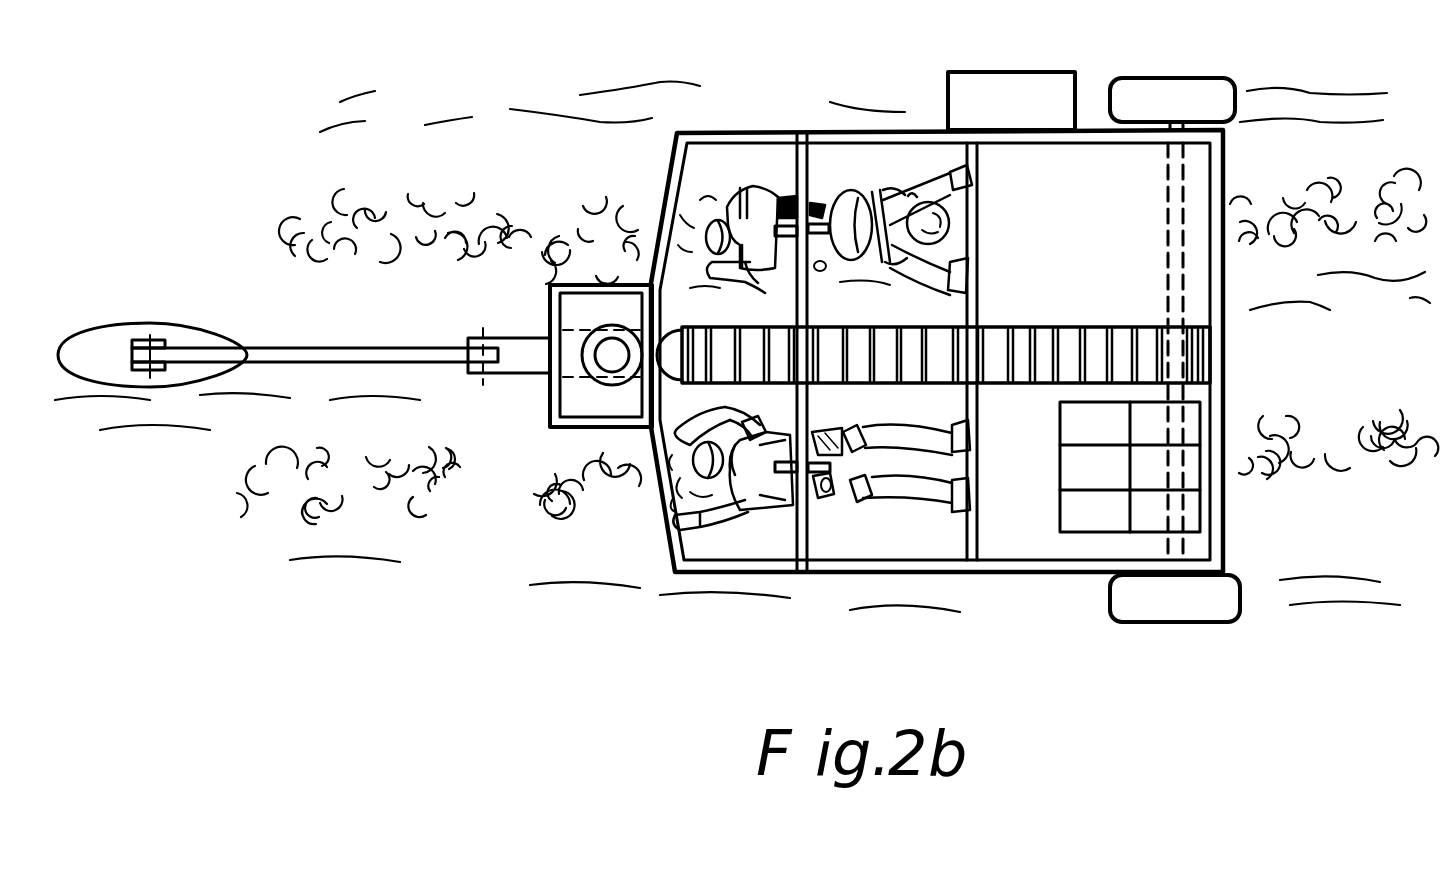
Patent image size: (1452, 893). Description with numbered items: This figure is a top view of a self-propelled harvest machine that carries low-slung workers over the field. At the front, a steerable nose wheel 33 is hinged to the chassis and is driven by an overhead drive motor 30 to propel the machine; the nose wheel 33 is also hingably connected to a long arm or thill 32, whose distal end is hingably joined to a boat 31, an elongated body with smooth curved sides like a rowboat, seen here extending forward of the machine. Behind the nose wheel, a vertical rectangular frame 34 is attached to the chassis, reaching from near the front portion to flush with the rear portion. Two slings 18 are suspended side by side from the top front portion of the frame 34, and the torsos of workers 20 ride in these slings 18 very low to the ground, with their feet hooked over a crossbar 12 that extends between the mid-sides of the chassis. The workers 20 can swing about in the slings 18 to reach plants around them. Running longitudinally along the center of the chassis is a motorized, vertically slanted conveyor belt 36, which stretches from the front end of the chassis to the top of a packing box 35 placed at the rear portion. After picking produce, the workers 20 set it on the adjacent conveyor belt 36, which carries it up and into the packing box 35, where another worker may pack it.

The crossbar 12 is at (977, 266).
The slings 18 is at (818, 222).
The workers 20 is at (820, 502).
The drive motor 30 is at (550, 420).
The boat 31 is at (172, 323).
The arm or thill 32 is at (305, 348).
The nose wheel 33 is at (572, 345).
The rectangular frame 34 is at (757, 133).
The packing box 35 is at (1080, 460).
The conveyor belt 36 is at (1098, 326).